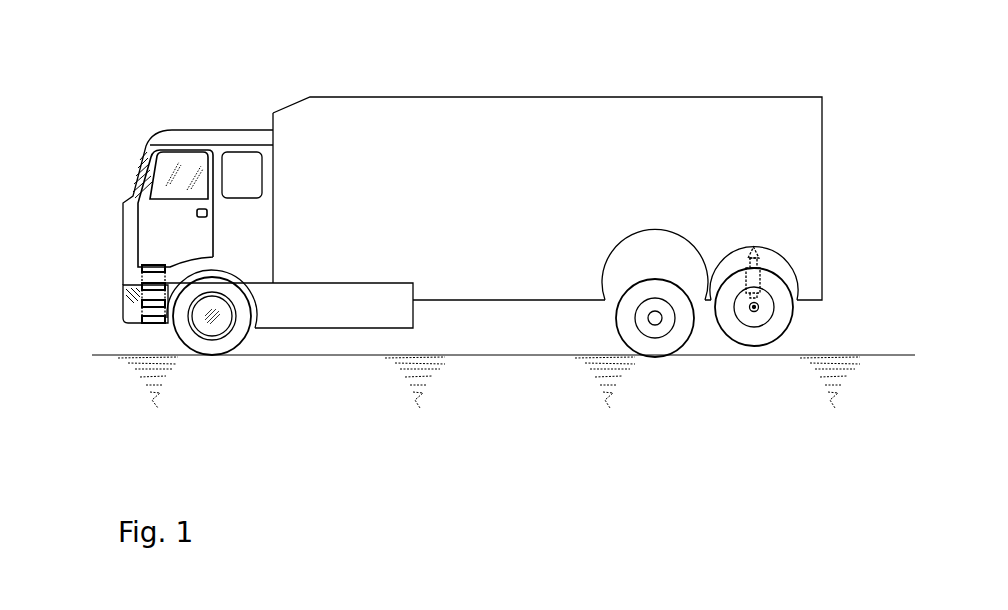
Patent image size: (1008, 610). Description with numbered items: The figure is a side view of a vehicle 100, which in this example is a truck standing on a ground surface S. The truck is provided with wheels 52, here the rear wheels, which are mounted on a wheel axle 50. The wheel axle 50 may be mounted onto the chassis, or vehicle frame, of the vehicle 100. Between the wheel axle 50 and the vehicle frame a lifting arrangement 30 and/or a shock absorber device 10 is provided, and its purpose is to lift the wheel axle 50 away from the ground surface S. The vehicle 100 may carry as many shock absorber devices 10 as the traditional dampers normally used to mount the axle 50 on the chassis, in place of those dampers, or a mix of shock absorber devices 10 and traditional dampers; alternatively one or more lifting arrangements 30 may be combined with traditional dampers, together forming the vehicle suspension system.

The vehicle 100 is at (520, 232).
The shock absorber device 10 is at (762, 263).
The lifting arrangement 30 is at (853, 256).
The wheel axle 50 is at (751, 311).
The wheels 52 is at (787, 325).
The ground surface S is at (118, 355).